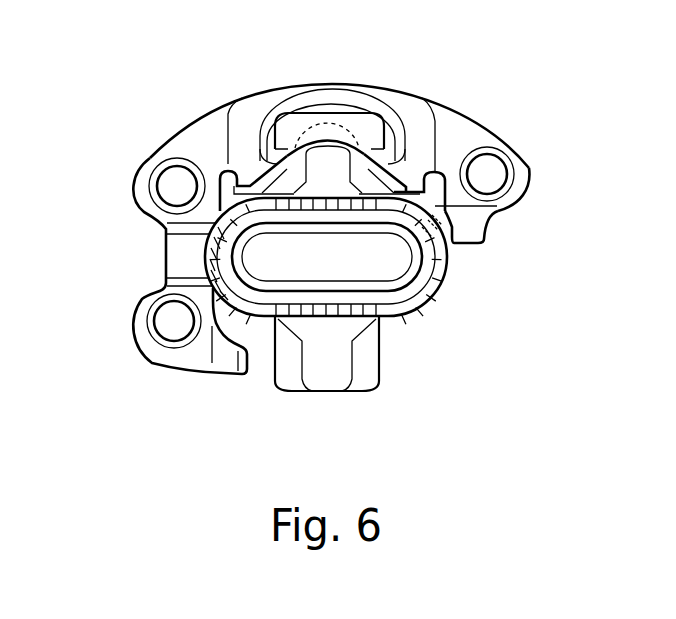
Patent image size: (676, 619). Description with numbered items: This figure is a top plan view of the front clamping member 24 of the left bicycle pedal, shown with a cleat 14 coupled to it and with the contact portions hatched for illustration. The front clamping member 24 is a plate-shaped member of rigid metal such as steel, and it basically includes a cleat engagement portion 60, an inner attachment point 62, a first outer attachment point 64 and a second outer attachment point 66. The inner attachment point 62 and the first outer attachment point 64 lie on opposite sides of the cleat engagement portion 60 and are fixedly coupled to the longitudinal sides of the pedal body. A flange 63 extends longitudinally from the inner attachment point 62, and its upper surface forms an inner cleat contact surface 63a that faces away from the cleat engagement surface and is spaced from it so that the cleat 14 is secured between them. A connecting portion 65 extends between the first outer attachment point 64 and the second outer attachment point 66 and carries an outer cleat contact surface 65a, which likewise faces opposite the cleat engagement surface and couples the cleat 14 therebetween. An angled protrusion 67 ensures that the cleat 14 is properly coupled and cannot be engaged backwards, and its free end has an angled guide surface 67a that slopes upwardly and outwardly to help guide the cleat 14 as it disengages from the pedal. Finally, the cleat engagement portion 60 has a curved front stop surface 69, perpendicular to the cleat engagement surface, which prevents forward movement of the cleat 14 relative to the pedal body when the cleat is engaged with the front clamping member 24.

The cleat 14 is at (434, 302).
The front clamping member 24 is at (452, 106).
The cleat engagement portion 60 is at (363, 88).
The inner attachment point 62 is at (505, 152).
The flange 63 is at (470, 247).
The inner cleat contact surface 63a is at (439, 228).
The first outer attachment point 64 is at (152, 165).
The connecting portion 65 is at (162, 258).
The outer cleat contact surface 65a is at (205, 244).
The second outer attachment point 66 is at (150, 347).
The protrusion 67 is at (220, 365).
The angled guide surface 67a is at (239, 368).
The front stop surface 69 is at (324, 136).